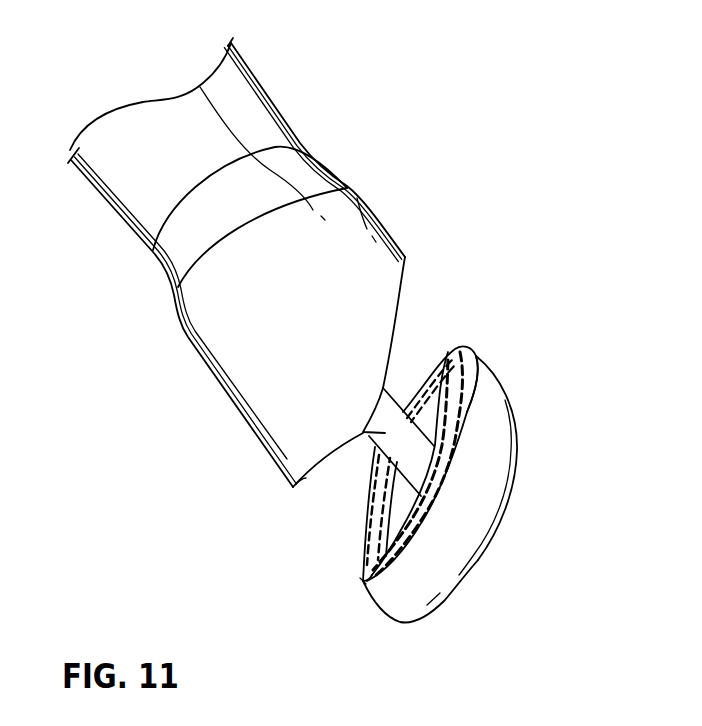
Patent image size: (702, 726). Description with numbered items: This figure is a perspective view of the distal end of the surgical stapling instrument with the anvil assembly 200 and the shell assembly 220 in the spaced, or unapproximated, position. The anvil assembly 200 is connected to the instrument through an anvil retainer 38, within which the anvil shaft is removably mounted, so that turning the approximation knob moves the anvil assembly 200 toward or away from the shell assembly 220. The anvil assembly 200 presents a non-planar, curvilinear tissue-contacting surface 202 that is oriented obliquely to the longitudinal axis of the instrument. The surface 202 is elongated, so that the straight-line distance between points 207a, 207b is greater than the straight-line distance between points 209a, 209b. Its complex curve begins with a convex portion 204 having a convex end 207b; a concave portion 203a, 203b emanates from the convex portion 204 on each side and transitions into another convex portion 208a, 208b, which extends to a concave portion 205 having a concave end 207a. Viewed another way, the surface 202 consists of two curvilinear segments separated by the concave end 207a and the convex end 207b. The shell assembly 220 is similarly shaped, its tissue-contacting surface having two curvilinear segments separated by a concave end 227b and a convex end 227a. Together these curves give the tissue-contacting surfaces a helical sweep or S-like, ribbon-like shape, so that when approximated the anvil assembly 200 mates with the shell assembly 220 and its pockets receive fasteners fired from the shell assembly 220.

The anvil retainer 38 is at (290, 475).
The anvil assembly 200 is at (485, 453).
The tissue-contacting surface 202 is at (457, 432).
The concave portion 203a is at (435, 518).
The concave portion 203b is at (380, 473).
The convex portion 204 is at (365, 588).
The concave portion 205 is at (462, 348).
The concave end 207a is at (473, 352).
The convex end 207b is at (360, 578).
The convex portion 208a is at (457, 408).
The convex portion 208b is at (432, 370).
The point 209a is at (453, 488).
The point 209b is at (383, 460).
The shell assembly 220 is at (357, 198).
The convex end 227a is at (405, 257).
The concave end 227b is at (294, 490).